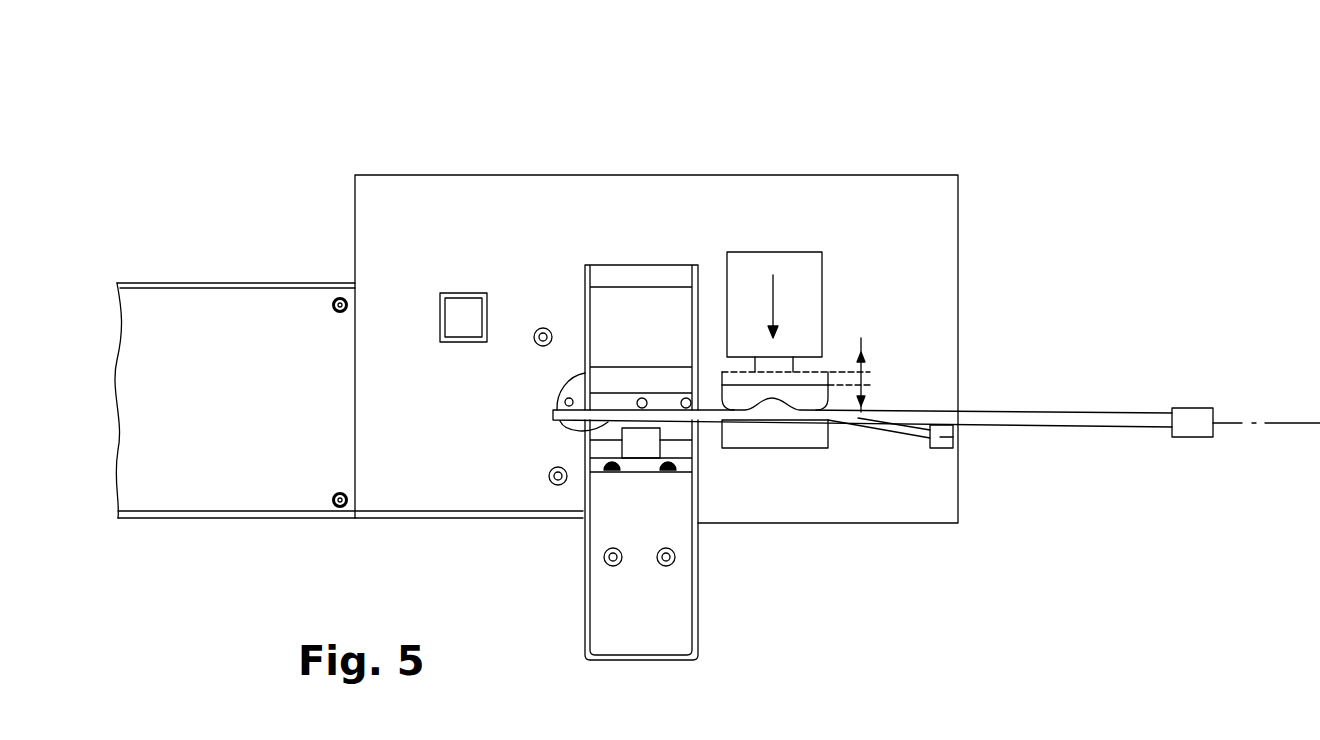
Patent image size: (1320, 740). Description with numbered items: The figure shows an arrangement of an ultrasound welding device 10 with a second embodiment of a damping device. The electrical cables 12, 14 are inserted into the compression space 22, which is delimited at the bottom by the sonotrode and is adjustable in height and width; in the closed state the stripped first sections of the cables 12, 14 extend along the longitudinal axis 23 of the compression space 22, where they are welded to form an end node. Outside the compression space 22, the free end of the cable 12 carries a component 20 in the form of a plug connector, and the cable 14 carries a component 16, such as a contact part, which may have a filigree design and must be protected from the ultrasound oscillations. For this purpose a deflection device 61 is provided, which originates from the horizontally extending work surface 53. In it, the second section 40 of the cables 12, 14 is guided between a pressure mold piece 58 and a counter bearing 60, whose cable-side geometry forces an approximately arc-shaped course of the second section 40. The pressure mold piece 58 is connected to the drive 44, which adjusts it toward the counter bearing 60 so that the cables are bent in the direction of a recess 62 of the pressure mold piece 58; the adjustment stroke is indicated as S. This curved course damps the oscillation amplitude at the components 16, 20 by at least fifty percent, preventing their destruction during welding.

The ultrasound welding device 10 is at (326, 93).
The work surface 53 is at (652, 215).
The compression space 22 is at (575, 428).
The electrical cable 12 is at (1120, 418).
The component 20 is at (1205, 415).
The longitudinal axis 23 is at (1290, 425).
The drive 44 is at (750, 270).
The pressure mold piece 58 is at (805, 395).
The stroke distance S is at (866, 375).
The counter bearing 60 is at (815, 447).
The electrical cable 14 is at (905, 437).
The component 16 is at (953, 437).
The deflection device 61 is at (820, 460).
The second section 40 is at (776, 425).
The recess 62 is at (762, 420).